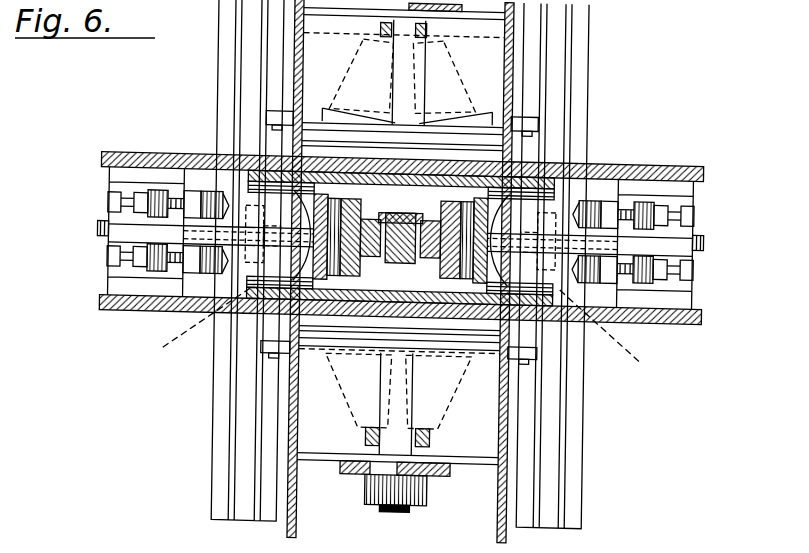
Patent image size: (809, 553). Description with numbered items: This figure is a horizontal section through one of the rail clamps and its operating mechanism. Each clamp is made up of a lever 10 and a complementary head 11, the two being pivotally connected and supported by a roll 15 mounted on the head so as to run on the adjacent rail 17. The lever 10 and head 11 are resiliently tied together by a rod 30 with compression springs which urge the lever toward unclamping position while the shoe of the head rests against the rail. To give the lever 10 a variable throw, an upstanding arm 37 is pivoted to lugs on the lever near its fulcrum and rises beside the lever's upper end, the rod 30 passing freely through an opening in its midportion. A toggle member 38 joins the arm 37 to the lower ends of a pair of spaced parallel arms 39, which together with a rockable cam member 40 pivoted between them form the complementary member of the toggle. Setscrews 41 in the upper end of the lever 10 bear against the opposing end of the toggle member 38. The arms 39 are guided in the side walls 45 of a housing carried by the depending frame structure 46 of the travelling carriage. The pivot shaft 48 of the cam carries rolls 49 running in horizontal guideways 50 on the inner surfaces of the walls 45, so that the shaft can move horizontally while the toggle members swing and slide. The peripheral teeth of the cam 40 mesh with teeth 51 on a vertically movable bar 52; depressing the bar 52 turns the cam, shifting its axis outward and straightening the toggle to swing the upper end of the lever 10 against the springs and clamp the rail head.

The lever 10 is at (159, 236).
The head 11 is at (261, 188).
The roll 15 is at (406, 336).
The rail 17 is at (240, 499).
The rod 30 is at (90, 240).
The upstanding arm 37 is at (196, 215).
The toggle member 38 is at (232, 231).
The spaced parallel arms 39 is at (307, 192).
The rockable cam member 40 is at (366, 196).
The setscrews 41 is at (107, 264).
The side walls 45 is at (525, 117).
The depending frame structure 46 is at (100, 312).
The pivot shaft 48 is at (310, 247).
The rolls 49 is at (303, 324).
The horizontal guideways 50 is at (553, 156).
The teeth 51 is at (375, 296).
The vertically movable bar 52 is at (402, 290).